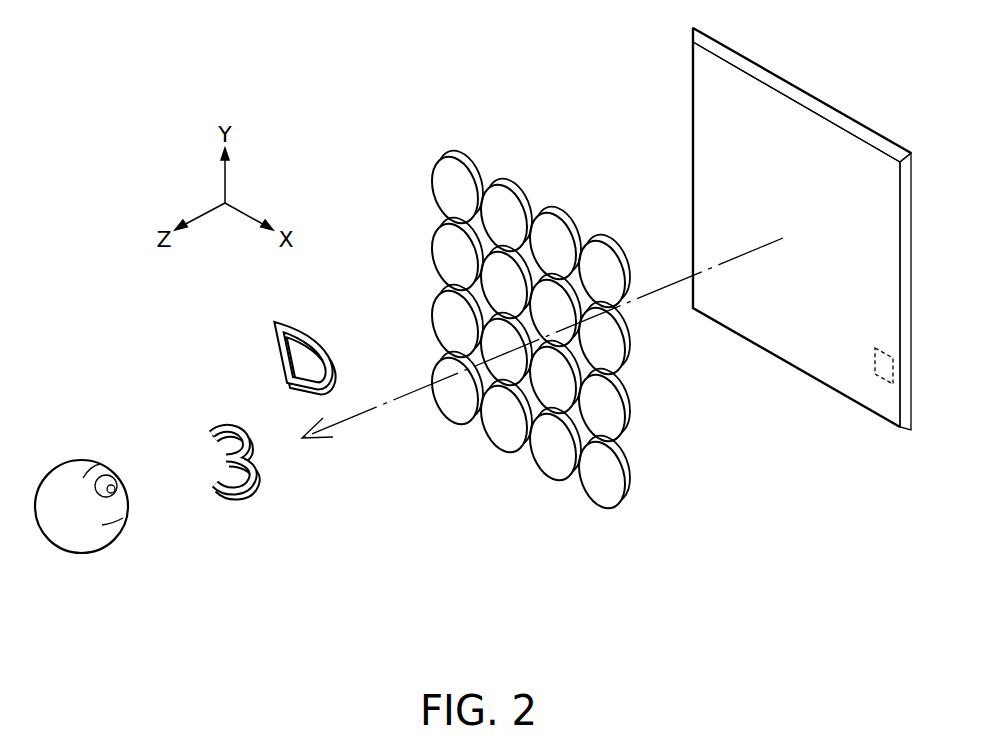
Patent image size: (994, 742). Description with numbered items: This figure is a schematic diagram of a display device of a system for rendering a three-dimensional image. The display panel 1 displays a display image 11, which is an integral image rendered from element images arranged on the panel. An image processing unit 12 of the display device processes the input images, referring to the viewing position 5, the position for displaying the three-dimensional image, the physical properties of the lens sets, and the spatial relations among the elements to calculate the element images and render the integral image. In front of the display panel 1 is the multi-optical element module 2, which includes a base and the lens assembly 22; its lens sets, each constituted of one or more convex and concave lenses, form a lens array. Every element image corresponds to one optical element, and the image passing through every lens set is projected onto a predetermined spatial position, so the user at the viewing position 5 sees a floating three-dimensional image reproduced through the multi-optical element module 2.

The display panel 1 is at (802, 246).
The display image 11 is at (882, 167).
The image processing unit 12 is at (878, 378).
The multi-optical element module 2 is at (496, 330).
The lens assembly 22 is at (452, 250).
The viewing position 5 is at (89, 458).